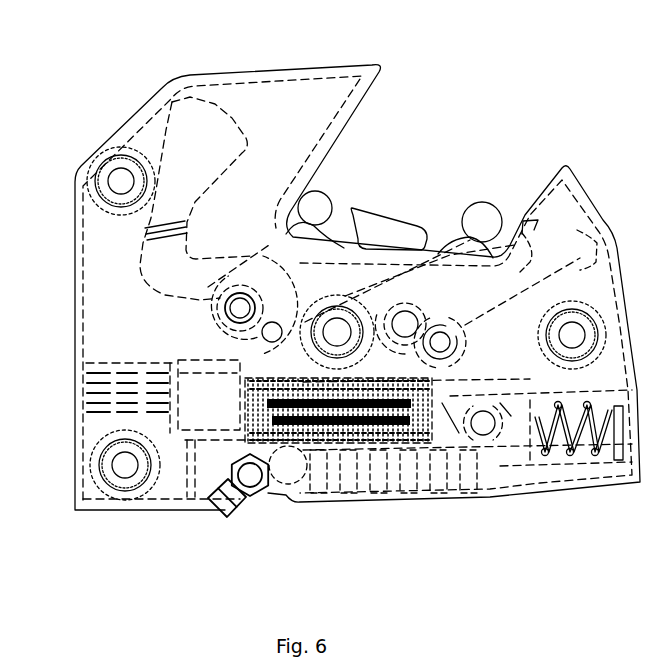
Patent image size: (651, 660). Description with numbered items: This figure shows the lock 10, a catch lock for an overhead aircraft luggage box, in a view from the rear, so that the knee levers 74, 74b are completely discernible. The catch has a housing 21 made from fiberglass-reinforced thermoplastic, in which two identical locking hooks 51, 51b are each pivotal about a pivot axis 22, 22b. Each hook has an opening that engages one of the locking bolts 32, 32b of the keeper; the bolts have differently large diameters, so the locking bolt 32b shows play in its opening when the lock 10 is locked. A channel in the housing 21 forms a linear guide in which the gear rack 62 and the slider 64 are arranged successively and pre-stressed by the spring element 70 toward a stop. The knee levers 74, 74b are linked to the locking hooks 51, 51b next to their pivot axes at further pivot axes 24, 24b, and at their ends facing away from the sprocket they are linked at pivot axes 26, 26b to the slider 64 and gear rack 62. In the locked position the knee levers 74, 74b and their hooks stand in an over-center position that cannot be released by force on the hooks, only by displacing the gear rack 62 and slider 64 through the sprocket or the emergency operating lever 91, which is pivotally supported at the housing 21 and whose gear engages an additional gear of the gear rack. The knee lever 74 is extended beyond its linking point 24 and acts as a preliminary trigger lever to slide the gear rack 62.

The lock 10 is at (464, 108).
The housing 21 is at (579, 178).
The pivot axis 22 is at (406, 324).
The pivot axis 22b is at (235, 310).
The pivot axis 24 is at (440, 352).
The pivot axis 24b is at (271, 338).
The pivot axis 26 is at (484, 430).
The pivot axis 26b is at (321, 443).
The locking bolt 32 is at (486, 214).
The locking bolt 32b is at (320, 205).
The locking hook 51 is at (469, 252).
The locking hook 51b is at (402, 228).
The gear rack 62 is at (376, 400).
The slider 64 is at (522, 400).
The spring element 70 is at (578, 452).
The knee lever 74 is at (459, 430).
The knee lever 74b is at (205, 132).
The emergency operating lever 91 is at (235, 517).